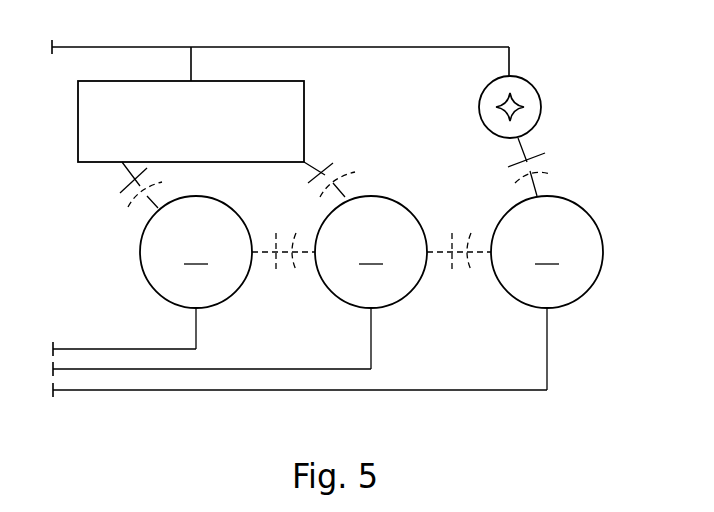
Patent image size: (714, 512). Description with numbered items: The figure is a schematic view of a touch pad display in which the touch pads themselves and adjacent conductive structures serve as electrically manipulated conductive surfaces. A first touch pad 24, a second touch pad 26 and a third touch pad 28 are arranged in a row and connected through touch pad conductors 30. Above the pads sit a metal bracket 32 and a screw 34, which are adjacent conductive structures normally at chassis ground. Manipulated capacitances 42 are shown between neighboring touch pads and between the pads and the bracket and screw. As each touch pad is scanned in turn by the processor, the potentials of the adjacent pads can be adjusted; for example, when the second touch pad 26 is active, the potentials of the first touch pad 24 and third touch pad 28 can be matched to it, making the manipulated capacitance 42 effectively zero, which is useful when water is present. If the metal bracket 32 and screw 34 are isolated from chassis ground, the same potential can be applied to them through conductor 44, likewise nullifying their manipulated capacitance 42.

The first touch pad 24 is at (196, 272).
The second touch pad 26 is at (371, 282).
The third touch pad 28 is at (547, 293).
The touch pad conductors 30 is at (133, 390).
The metal bracket 32 is at (304, 107).
The screw 34 is at (541, 105).
The manipulated capacitance 42 is at (155, 189).
The conductor 44 is at (440, 47).